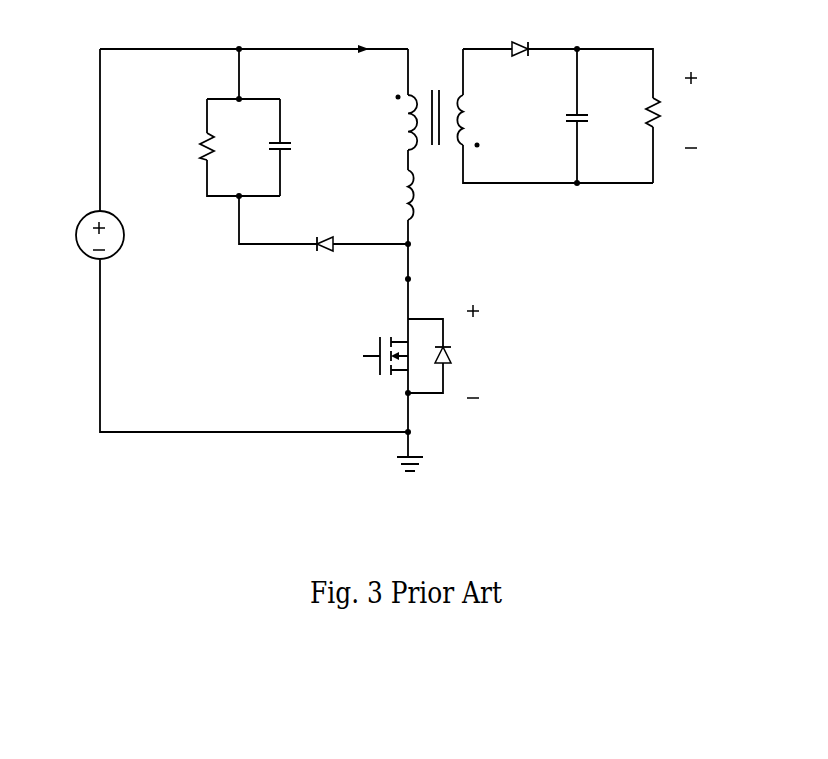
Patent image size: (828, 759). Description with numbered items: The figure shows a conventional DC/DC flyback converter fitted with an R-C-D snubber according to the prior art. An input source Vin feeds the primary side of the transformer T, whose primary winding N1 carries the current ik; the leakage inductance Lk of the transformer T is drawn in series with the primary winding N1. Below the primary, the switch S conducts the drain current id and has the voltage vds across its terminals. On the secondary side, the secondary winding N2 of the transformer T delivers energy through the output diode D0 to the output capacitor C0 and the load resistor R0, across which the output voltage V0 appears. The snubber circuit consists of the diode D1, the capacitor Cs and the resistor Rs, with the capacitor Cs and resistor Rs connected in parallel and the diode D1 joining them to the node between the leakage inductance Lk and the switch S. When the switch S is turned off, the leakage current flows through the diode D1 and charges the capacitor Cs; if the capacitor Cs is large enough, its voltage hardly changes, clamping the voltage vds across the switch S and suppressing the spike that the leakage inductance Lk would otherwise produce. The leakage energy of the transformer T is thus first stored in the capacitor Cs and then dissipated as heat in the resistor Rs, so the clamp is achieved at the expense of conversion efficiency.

The input voltage source Vin is at (125, 235).
The resistor Rs is at (186, 146).
The capacitor Cs is at (294, 146).
The diode D1 is at (328, 262).
The primary winding current ik is at (372, 33).
The primary winding N1 is at (387, 123).
The leakage inductance Lk is at (390, 195).
The transformer T is at (433, 104).
The secondary winding N2 is at (481, 121).
The output rectifier diode D0 is at (517, 34).
The output capacitor C0 is at (562, 132).
The load resistor R0 is at (634, 124).
The output voltage V0 is at (693, 110).
The drain current id is at (422, 283).
The switch S is at (385, 369).
The drain-source voltage vds is at (451, 351).